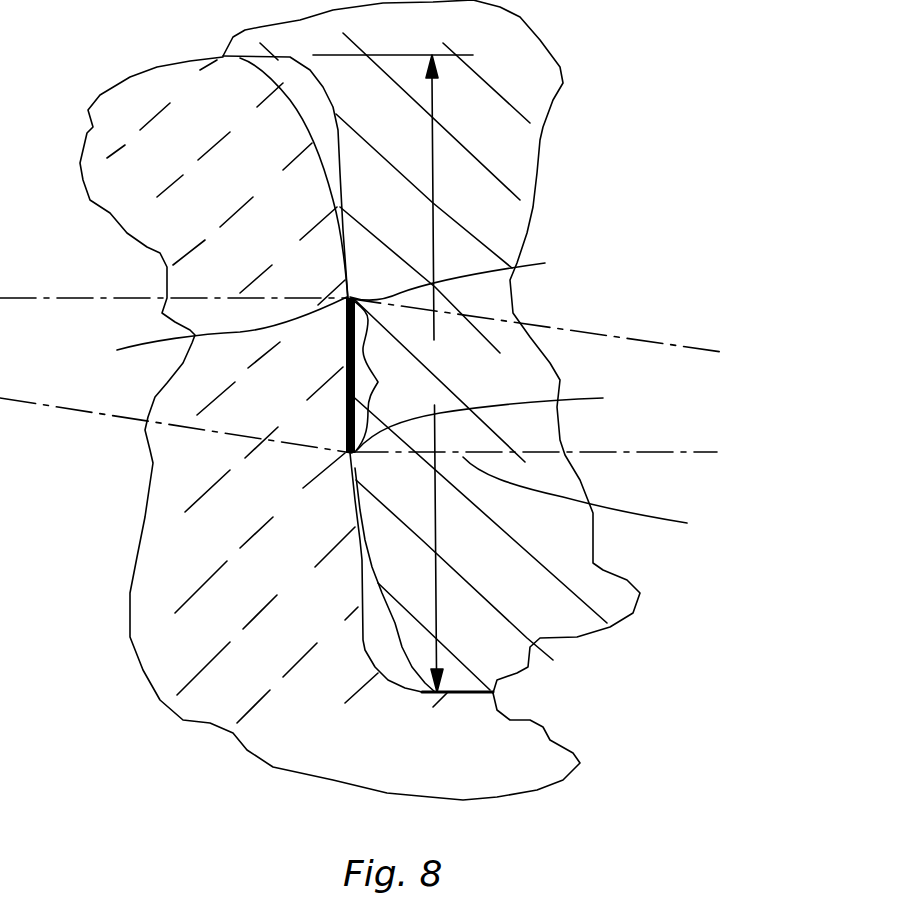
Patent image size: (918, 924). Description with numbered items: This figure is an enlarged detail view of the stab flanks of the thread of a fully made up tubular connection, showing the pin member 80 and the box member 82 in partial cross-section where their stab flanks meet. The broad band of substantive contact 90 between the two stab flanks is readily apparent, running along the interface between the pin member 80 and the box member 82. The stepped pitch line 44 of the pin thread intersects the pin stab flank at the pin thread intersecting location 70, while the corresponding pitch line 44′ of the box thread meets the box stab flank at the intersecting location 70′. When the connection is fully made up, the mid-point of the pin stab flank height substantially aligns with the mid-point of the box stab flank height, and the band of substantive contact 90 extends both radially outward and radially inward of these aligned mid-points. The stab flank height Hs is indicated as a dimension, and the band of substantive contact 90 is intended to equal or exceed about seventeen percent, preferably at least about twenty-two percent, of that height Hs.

The pin member 80 is at (158, 663).
The box member 82 is at (510, 150).
The band of substantive contact 90 is at (376, 380).
The pin thread intersecting location 70 is at (202, 337).
The box thread intersecting location 70′ is at (649, 382).
The pitch line 44 is at (471, 273).
The box pitch line 44′ is at (741, 503).
The stab flank height Hs is at (393, 373).